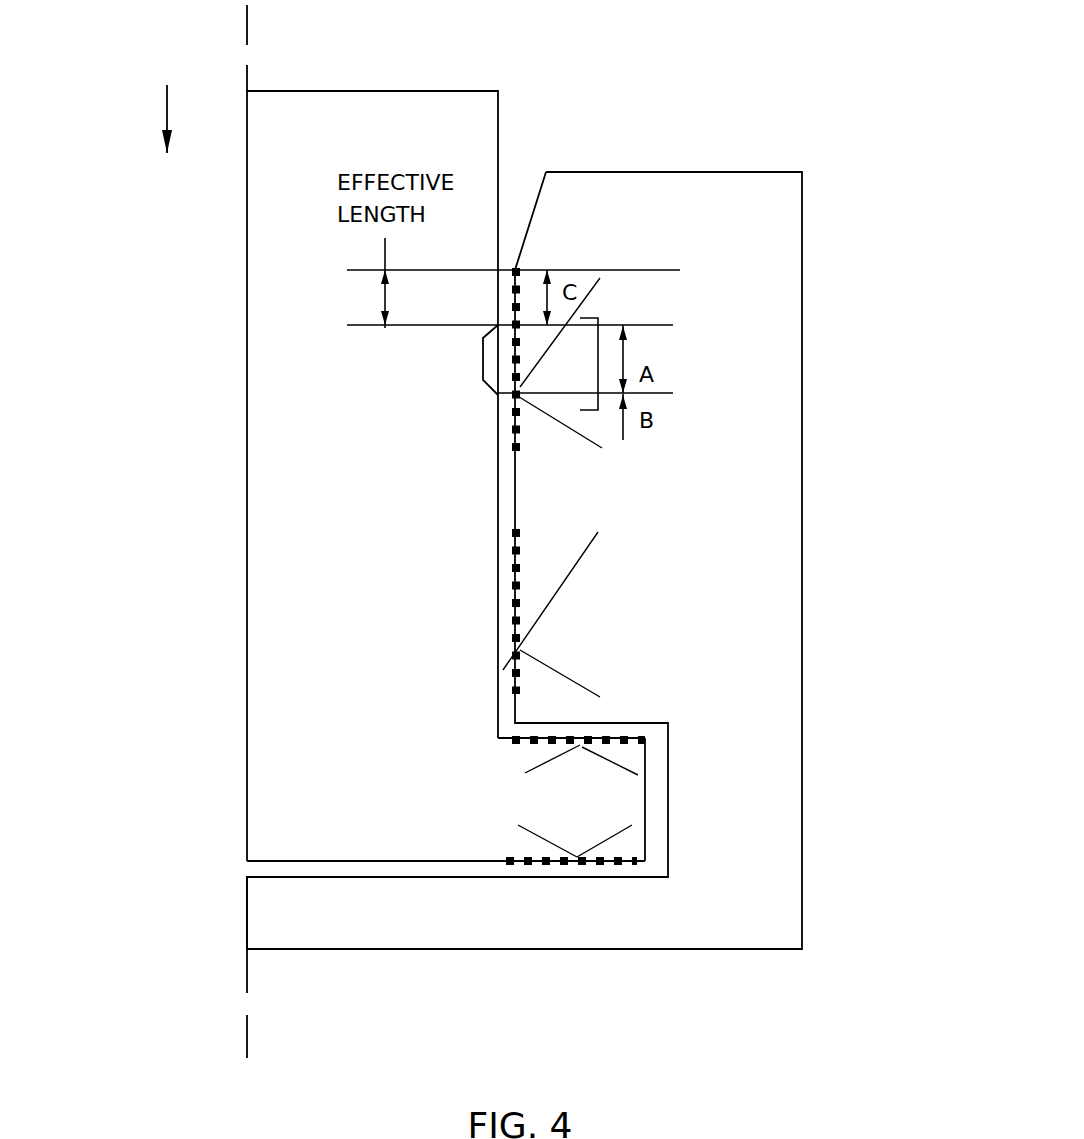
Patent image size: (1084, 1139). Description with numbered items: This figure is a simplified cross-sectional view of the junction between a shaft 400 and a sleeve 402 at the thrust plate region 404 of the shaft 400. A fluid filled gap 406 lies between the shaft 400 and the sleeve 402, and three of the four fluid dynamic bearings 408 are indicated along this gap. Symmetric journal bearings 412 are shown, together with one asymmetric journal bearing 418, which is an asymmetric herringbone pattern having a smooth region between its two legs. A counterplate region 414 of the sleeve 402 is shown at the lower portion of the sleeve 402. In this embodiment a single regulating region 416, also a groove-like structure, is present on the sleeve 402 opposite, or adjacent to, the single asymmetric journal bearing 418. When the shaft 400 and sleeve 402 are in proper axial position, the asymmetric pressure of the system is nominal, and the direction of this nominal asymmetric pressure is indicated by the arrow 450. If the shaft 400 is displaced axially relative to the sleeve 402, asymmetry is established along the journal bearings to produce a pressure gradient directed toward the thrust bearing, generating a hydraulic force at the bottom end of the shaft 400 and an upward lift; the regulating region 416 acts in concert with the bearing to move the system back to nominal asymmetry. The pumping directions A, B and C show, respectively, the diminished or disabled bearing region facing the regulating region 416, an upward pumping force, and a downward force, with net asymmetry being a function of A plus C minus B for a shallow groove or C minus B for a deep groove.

The shaft 400 is at (307, 517).
The sleeve 402 is at (771, 511).
The thrust plate region 404 is at (348, 766).
The fluid filled gap 406 is at (657, 805).
The fluid dynamic bearings 408 is at (516, 270).
The symmetric journal bearings 412 is at (550, 603).
The counterplate region 414 is at (313, 923).
The regulating region 416 is at (483, 362).
The asymmetric journal bearing 418 is at (598, 358).
The direction of nominal asymmetric pressure 450 is at (165, 106).